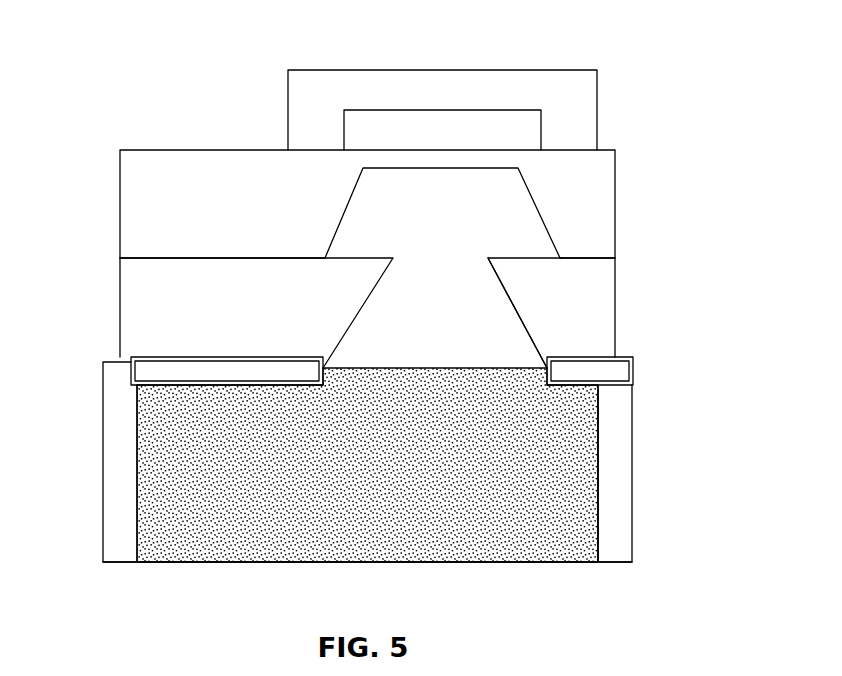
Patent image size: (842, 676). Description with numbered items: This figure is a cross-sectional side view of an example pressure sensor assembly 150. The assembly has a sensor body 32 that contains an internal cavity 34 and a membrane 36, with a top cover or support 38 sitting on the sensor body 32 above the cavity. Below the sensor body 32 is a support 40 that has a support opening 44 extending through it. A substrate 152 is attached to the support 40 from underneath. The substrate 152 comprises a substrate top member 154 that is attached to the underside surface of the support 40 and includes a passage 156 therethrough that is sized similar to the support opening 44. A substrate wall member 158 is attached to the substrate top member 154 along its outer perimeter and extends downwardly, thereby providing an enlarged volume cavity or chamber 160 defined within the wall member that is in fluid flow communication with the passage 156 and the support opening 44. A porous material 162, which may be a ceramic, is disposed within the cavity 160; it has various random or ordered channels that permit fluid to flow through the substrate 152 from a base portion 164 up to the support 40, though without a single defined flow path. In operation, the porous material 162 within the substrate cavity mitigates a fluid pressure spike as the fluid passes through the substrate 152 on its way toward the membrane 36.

The pressure sensor assembly 150 is at (641, 66).
The top cover or support 38 is at (563, 80).
The sensor body 32 is at (118, 205).
The membrane 36 is at (385, 187).
The internal cavity 34 is at (519, 223).
The support 40 is at (173, 295).
The support opening 44 is at (445, 335).
The passage 156 is at (530, 365).
The substrate top member 154 is at (152, 372).
The substrate 152 is at (92, 442).
The porous material 162 is at (533, 442).
The substrate wall member 158 is at (108, 480).
The cavity or chamber 160 is at (596, 527).
The base portion 164 is at (613, 563).